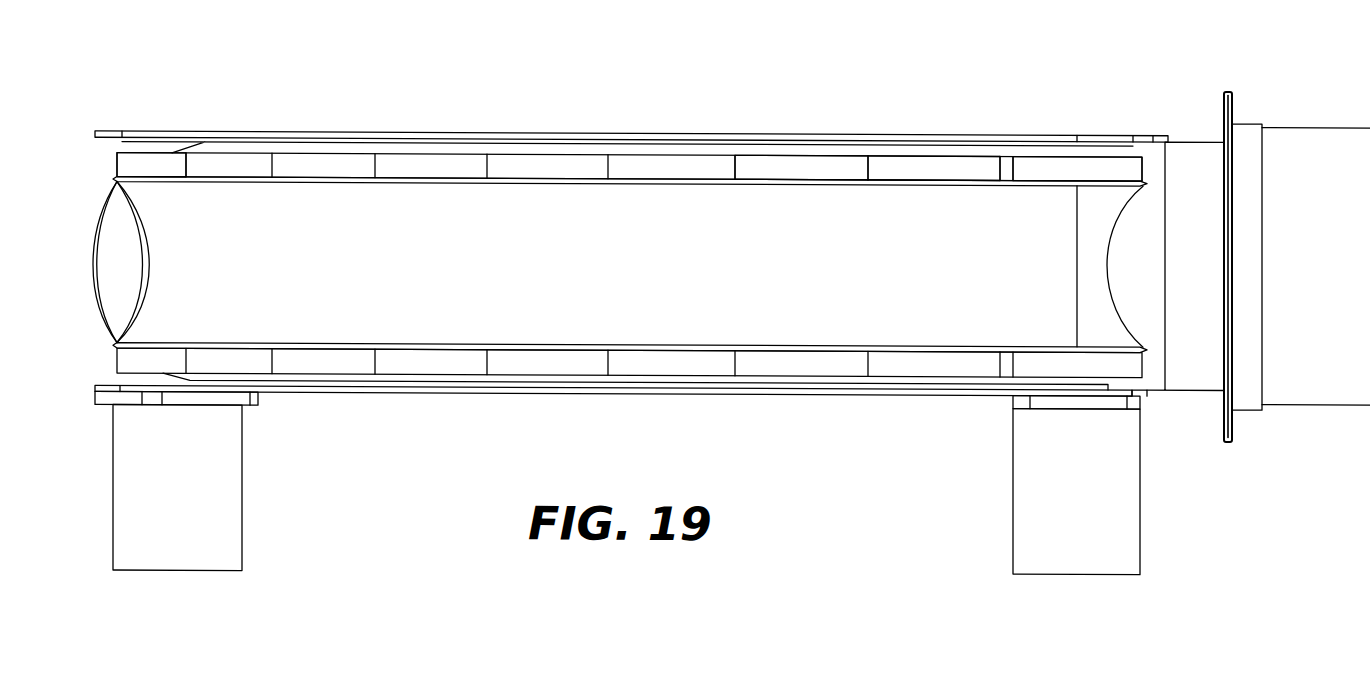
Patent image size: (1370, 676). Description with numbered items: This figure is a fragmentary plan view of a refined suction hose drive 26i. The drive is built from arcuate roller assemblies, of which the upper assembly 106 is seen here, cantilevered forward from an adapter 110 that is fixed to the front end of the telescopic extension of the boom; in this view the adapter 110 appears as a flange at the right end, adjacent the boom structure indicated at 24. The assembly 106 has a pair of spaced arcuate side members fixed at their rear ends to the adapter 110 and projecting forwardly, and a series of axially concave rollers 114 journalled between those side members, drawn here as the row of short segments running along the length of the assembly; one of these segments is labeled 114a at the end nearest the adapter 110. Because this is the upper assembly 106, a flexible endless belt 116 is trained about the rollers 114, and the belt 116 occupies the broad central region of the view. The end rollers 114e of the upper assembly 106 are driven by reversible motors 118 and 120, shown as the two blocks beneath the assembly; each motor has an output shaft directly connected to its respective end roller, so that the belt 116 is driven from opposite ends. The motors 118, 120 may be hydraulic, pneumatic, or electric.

The pipe 24 is at (1297, 122).
The suction hose drive 26i is at (735, 123).
The arcuate roller assembly 106 is at (425, 130).
The adapter 110 is at (1224, 86).
The axially concave rollers 114 is at (917, 163).
The end segment 114a is at (1065, 162).
The end rollers 114e is at (128, 162).
The flexible endless belt 116 is at (630, 281).
The reversible motor 118 is at (198, 499).
The reversible motor 120 is at (1100, 500).